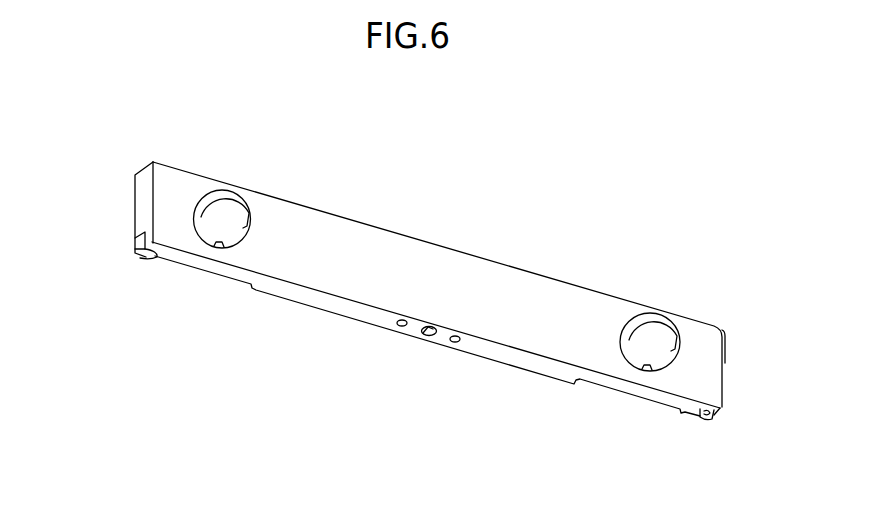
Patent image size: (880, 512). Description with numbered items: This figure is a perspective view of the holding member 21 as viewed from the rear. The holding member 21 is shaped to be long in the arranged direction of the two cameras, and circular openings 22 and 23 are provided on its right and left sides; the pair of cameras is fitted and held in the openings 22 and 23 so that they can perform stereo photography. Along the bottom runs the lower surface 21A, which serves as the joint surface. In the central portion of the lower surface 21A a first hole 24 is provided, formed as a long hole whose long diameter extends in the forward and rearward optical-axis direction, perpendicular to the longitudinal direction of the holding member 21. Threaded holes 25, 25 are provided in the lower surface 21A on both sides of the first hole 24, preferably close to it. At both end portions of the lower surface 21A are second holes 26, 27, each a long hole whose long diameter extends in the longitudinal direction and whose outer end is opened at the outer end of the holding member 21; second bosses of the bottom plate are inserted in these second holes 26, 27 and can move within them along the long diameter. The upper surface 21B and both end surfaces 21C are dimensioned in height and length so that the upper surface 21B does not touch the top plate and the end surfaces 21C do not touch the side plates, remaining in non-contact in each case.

The holding member 21 is at (458, 229).
The lower surface 21A is at (536, 362).
The upper surface 21B is at (557, 278).
The end surfaces 21C is at (146, 207).
The circular opening 22 is at (658, 327).
The circular opening 23 is at (237, 199).
The first hole 24 is at (426, 335).
The threaded holes 25 is at (401, 327).
The second hole 26 is at (708, 419).
The second hole 27 is at (137, 254).